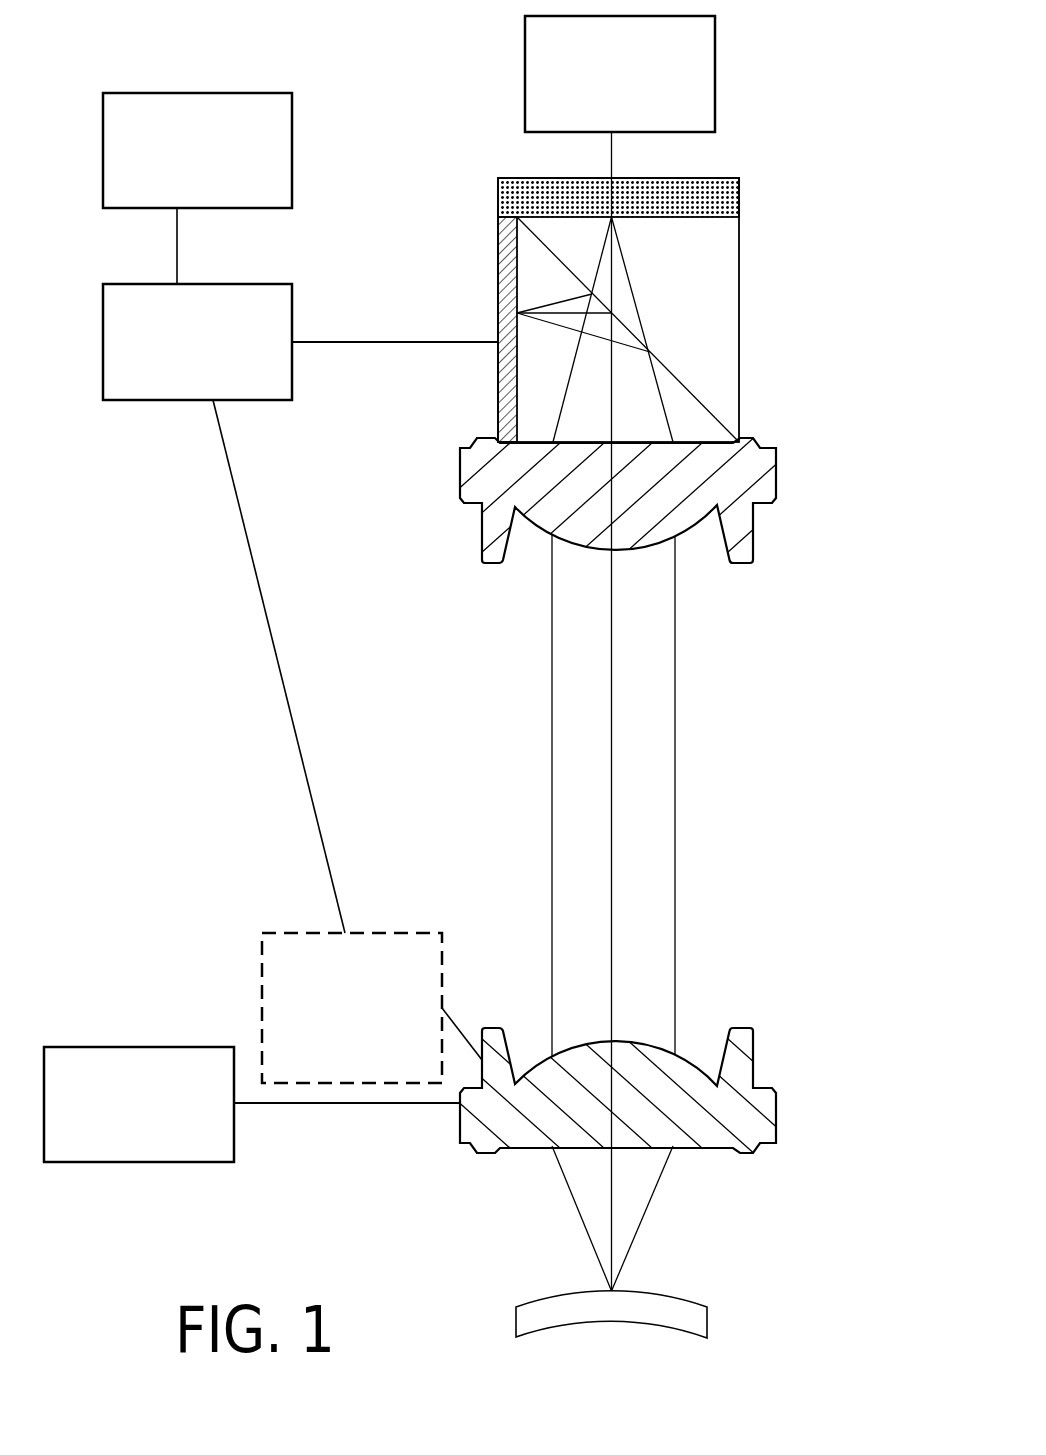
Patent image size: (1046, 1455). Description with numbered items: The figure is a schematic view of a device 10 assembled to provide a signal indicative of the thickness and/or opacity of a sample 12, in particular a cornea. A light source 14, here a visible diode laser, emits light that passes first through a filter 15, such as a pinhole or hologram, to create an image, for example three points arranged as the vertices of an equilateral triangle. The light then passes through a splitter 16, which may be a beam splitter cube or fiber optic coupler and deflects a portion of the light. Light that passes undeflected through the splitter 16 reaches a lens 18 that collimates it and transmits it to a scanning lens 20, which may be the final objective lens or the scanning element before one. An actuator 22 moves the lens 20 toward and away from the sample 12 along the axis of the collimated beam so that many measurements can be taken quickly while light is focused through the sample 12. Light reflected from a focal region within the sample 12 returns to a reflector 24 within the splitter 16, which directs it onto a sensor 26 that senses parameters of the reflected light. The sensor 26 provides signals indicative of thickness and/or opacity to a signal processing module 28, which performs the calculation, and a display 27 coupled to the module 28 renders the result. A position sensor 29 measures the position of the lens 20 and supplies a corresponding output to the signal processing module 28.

The device 10 is at (400, 122).
The sample 12 is at (728, 1315).
The light source 14 is at (620, 74).
The filter 15 is at (739, 207).
The splitter 16 is at (739, 303).
The lens 18 is at (776, 475).
The scanning lens 20 is at (776, 1115).
The actuator 22 is at (139, 1104).
The reflector 24 is at (718, 401).
The sensor 26 is at (497, 244).
The display 27 is at (197, 150).
The signal processing module 28 is at (197, 342).
The position sensor 29 is at (352, 1008).